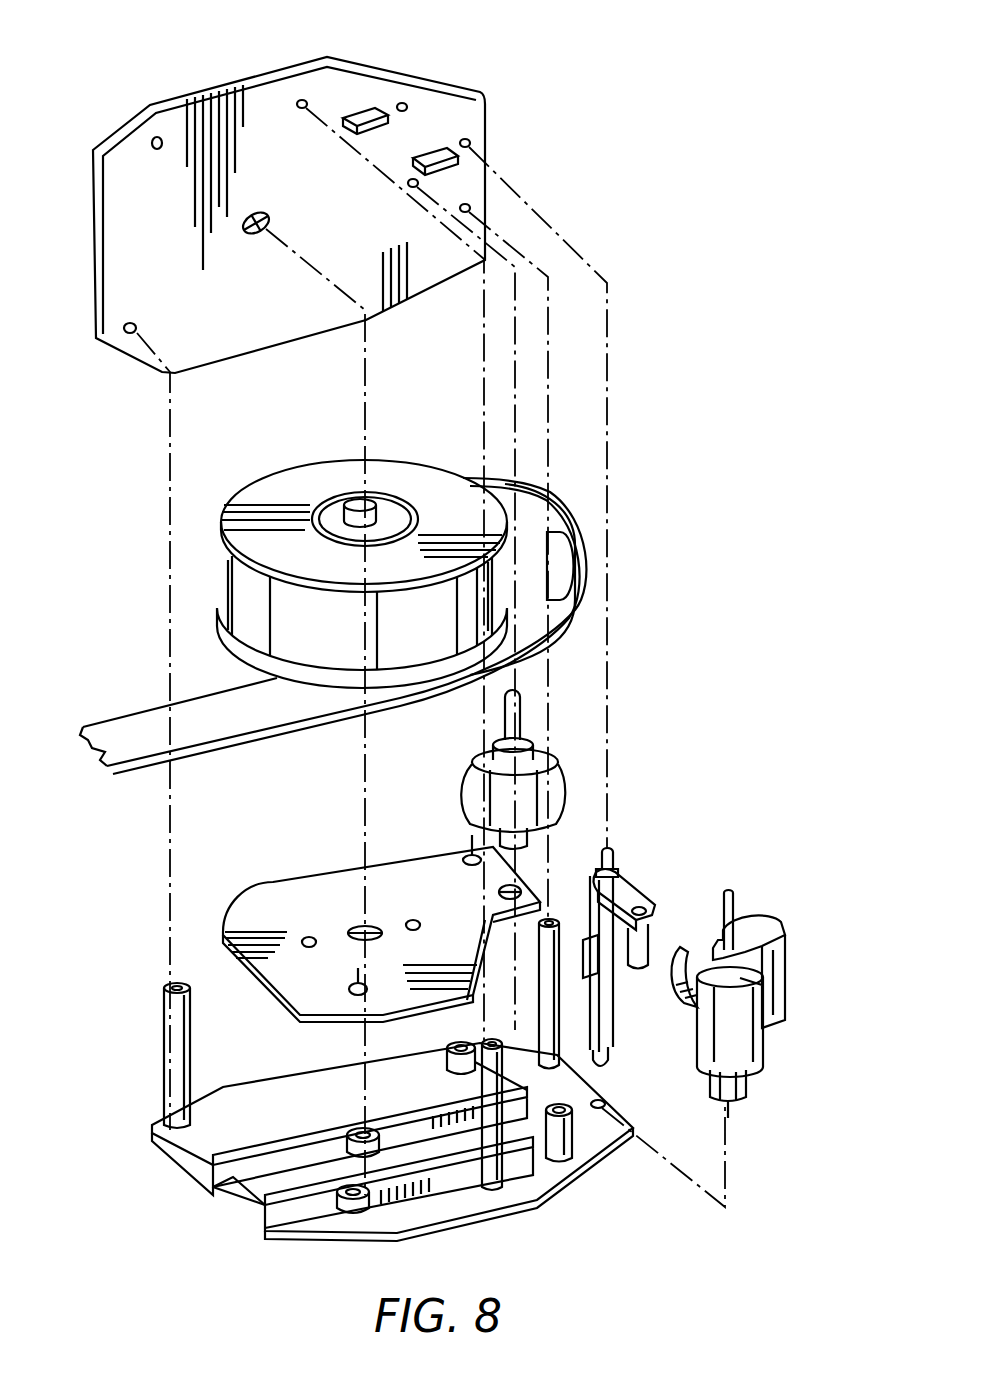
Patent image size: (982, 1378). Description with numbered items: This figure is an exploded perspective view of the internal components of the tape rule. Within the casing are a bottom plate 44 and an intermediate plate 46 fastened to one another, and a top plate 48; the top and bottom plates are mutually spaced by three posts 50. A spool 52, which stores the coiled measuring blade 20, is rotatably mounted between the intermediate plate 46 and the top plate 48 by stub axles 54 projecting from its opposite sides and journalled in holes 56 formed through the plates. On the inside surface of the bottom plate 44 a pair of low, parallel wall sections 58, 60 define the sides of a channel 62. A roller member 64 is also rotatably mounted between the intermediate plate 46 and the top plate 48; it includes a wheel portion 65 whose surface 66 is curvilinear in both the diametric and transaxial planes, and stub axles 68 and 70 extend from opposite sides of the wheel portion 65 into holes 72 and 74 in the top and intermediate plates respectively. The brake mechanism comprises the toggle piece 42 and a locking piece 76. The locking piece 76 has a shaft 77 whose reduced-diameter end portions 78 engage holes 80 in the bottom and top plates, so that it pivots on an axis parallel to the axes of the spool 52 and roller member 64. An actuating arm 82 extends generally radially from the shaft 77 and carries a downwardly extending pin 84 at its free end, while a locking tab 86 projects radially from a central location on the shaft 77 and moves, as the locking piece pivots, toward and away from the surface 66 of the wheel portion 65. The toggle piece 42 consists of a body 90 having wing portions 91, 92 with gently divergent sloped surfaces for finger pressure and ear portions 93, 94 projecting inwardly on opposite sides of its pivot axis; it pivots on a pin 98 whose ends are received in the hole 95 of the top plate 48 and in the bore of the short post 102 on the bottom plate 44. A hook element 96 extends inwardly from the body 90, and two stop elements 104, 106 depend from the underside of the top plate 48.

The blade 20 is at (128, 722).
The toggle piece 42 is at (746, 976).
The bottom plate 44 is at (387, 1161).
The intermediate plate 46 is at (260, 913).
The top plate 48 is at (133, 270).
The posts 50 is at (172, 1056).
The spool 52 is at (305, 490).
The stub axles 54 is at (370, 497).
The holes 56 is at (260, 214).
The wall section 58 is at (308, 1150).
The wall section 60 is at (318, 1213).
The channel 62 is at (250, 1180).
The roller member 64 is at (498, 758).
The wheel portion 65 is at (482, 752).
The surface 66 is at (552, 792).
The stub axle 68 is at (515, 700).
The stub axle 70 is at (525, 838).
The hole 72 is at (410, 188).
The hole 74 is at (503, 893).
The locking piece 76 is at (631, 954).
The shaft 77 is at (600, 1015).
The end portions 78 is at (612, 860).
The holes 80 is at (470, 146).
The actuating arm 82 is at (636, 898).
The pin 84 is at (645, 942).
The locking tab 86 is at (575, 928).
The body 90 is at (788, 945).
The wing portion 91 is at (777, 1010).
The wing portion 92 is at (747, 1042).
The ear portion 93 is at (766, 918).
The ear portion 94 is at (712, 1048).
The hole 95 is at (405, 105).
The hook element 96 is at (680, 978).
The pin 98 is at (731, 897).
The short post 102 is at (553, 1150).
The stop element 104 is at (440, 152).
The stop element 106 is at (352, 108).